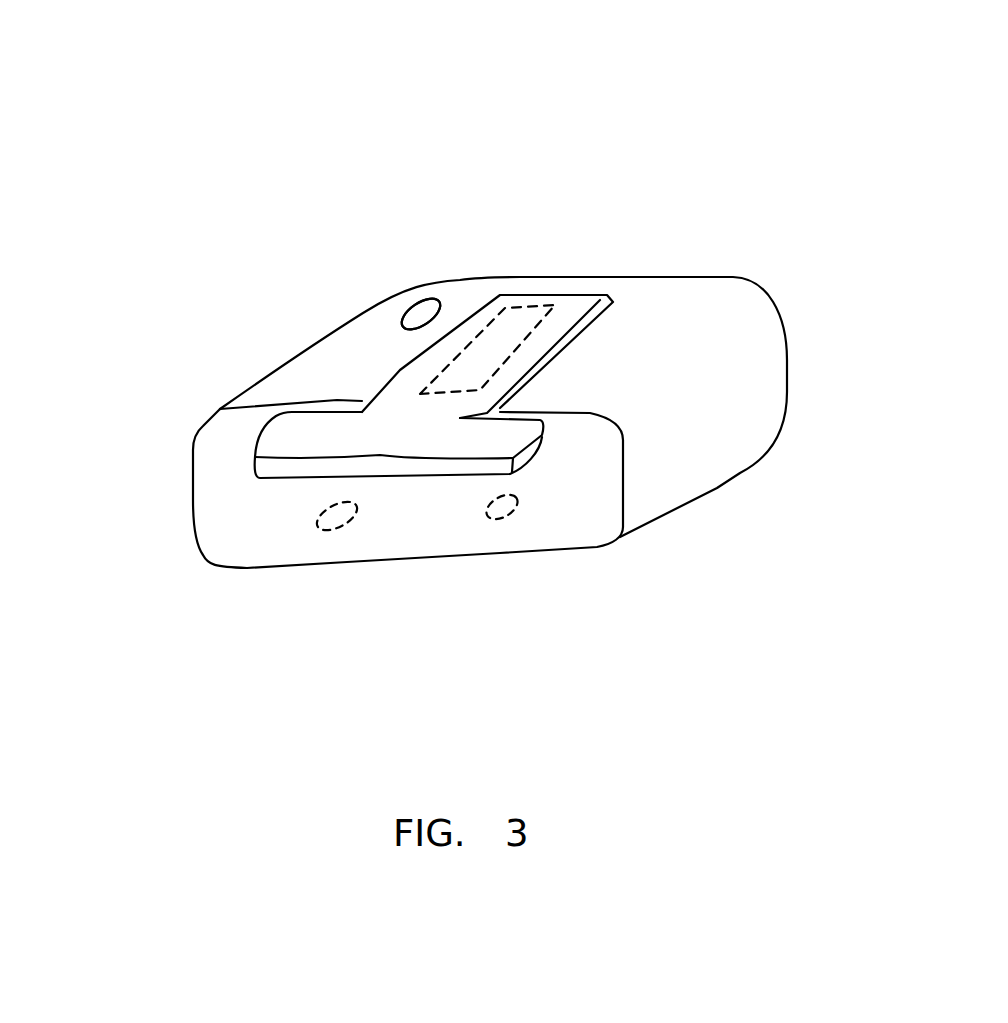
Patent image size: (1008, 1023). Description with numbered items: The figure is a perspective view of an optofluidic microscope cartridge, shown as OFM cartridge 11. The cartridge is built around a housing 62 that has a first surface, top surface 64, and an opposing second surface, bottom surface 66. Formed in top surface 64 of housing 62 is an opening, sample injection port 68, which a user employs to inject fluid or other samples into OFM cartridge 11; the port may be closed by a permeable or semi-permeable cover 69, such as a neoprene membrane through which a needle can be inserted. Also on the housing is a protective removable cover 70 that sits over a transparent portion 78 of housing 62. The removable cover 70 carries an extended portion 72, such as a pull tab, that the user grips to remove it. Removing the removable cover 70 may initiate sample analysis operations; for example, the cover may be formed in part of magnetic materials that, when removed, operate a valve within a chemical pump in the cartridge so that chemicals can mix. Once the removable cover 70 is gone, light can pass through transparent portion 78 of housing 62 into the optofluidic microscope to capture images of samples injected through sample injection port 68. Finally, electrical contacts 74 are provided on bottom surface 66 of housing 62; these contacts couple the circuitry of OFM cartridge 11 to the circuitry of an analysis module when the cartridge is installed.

The OFM cartridge 11 is at (583, 117).
The housing 62 is at (787, 392).
The top surface 64 is at (692, 297).
The bottom surface 66 is at (582, 553).
The sample injection port 68 is at (423, 300).
The permeable or semi-permeable cover 69 is at (420, 306).
The removable cover 70 is at (488, 308).
The extended portion 72 is at (268, 450).
The electrical contacts 74 is at (337, 570).
The transparent portion 78 is at (522, 322).